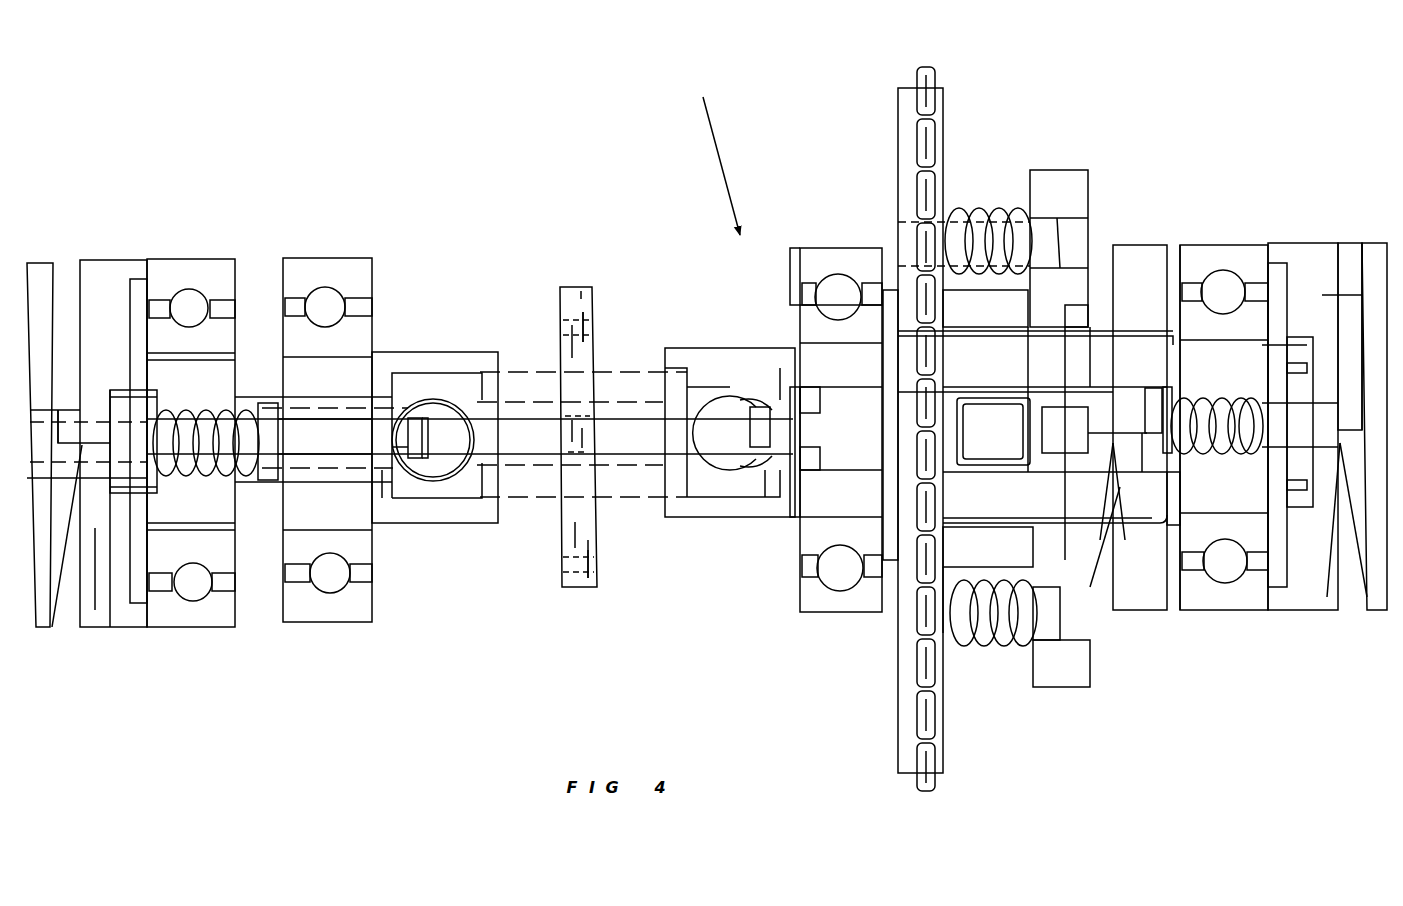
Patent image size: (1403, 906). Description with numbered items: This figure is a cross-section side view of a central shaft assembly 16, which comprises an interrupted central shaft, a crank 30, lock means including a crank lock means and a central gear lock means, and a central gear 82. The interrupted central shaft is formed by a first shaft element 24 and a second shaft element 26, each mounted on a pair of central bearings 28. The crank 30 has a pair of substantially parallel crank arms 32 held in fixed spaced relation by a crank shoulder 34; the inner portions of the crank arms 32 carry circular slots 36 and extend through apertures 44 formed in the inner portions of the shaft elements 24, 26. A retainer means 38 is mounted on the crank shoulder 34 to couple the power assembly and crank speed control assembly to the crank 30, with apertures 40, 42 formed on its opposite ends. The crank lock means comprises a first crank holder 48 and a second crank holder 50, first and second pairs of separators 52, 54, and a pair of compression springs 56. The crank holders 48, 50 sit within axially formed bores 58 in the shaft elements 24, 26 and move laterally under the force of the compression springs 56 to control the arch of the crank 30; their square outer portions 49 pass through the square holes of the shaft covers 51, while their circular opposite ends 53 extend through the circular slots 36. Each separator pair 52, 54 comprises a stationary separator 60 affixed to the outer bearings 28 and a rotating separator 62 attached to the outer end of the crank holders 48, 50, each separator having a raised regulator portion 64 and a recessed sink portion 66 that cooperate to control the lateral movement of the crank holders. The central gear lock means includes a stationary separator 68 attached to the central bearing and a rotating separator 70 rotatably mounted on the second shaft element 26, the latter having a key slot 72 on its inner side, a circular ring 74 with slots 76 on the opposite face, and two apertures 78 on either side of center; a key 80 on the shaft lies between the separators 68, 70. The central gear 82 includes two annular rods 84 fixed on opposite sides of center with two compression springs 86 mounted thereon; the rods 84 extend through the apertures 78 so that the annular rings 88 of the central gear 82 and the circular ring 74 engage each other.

The central shaft assembly 16 is at (716, 155).
The first shaft element 24 is at (395, 355).
The second shaft element 26 is at (677, 347).
The central bearings 28 is at (170, 260).
The crank 30 is at (627, 337).
The crank arms 32 is at (437, 457).
The crank shoulder 34 is at (513, 370).
The circular slots 36 is at (417, 430).
The retainer means 38 is at (577, 286).
The aperture 40 is at (587, 327).
The aperture 42 is at (597, 563).
The apertures 44 is at (437, 413).
The first crank holder 48 is at (395, 447).
The outer portions 49 is at (268, 470).
The second crank holder 50 is at (797, 492).
The shaft covers 51 is at (120, 497).
The first pair of separators 52 is at (67, 240).
The opposite ends 53 is at (330, 440).
The second pair of separators 54 is at (1353, 251).
The compression springs 56 is at (210, 430).
The bores 58 is at (382, 473).
The stationary separator 60 is at (120, 260).
The rotating separator 62 is at (42, 260).
The regulator portion 64 is at (87, 270).
The sink portion 66 is at (62, 270).
The stationary separator 68 is at (1138, 245).
The rotating separator 70 is at (1073, 170).
The key slot 72 is at (1050, 440).
The circular ring 74 is at (1030, 223).
The slots 76 is at (998, 465).
The apertures 78 is at (1080, 233).
The key 80 is at (1083, 432).
The central gear 82 is at (943, 107).
The annular rods 84 is at (968, 213).
The compression springs 86 is at (995, 300).
The annular rings 88 is at (1008, 445).